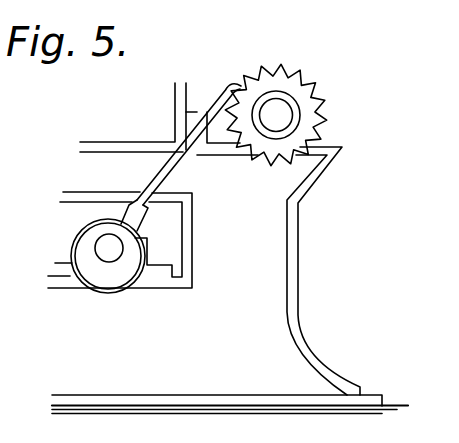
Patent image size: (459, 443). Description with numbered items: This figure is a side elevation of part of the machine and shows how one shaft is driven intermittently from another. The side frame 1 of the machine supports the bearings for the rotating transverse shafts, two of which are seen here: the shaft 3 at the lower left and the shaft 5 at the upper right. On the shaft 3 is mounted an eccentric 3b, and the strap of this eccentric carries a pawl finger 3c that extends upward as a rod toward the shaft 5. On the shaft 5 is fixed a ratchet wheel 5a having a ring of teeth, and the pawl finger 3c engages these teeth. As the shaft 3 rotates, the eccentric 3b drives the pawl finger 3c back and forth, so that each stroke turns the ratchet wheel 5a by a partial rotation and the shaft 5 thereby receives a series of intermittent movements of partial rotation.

The side frame 1 is at (256, 277).
The transverse shaft 3 is at (108, 256).
The eccentric 3b is at (108, 256).
The pawl finger 3c is at (160, 177).
The transverse shaft 5 is at (276, 115).
The ratchet wheel 5a is at (275, 114).